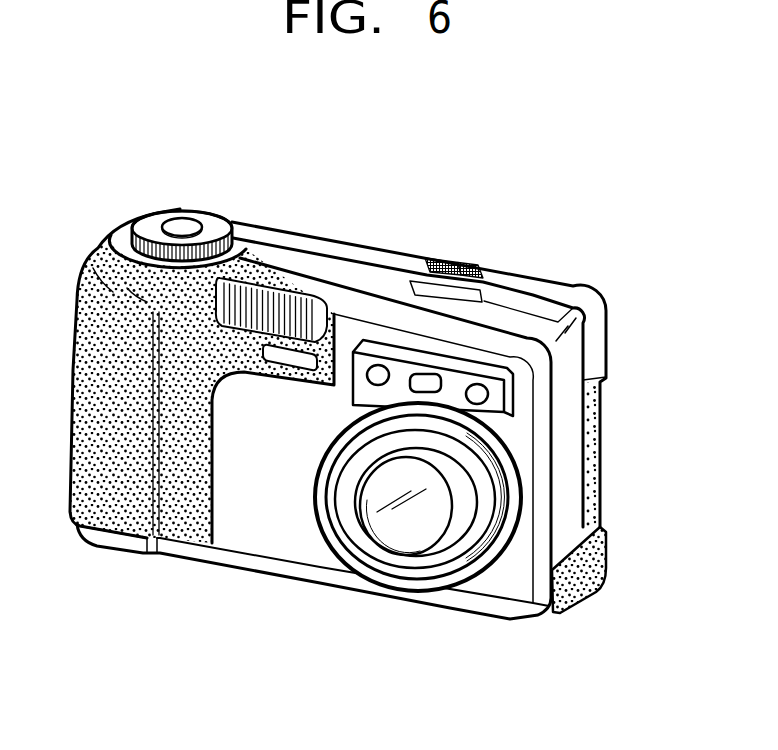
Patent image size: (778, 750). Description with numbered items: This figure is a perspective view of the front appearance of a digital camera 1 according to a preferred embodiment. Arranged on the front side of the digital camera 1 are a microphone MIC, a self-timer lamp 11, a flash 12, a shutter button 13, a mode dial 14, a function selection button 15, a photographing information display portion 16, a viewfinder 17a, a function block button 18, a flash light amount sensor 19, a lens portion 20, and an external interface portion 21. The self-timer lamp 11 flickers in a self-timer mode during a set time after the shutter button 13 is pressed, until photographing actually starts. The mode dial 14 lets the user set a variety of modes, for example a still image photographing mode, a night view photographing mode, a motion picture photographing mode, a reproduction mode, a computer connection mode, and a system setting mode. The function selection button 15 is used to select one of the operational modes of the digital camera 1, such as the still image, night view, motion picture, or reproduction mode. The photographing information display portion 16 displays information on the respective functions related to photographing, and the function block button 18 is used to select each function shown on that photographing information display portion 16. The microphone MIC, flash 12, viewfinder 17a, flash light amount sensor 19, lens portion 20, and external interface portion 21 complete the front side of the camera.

The digital camera 1 is at (260, 643).
The self-timer lamp 11 is at (378, 366).
The flash 12 is at (264, 300).
The shutter button 13 is at (181, 221).
The mode dial 14 is at (148, 228).
The function selection button 15 is at (440, 262).
The photographing information display portion 16 is at (448, 289).
The viewfinder 17a is at (441, 377).
The function block button 18 is at (474, 269).
The flash light amount sensor 19 is at (489, 396).
The lens portion 20 is at (430, 507).
The external interface portion 21 is at (597, 552).
The microphone MIC is at (294, 360).